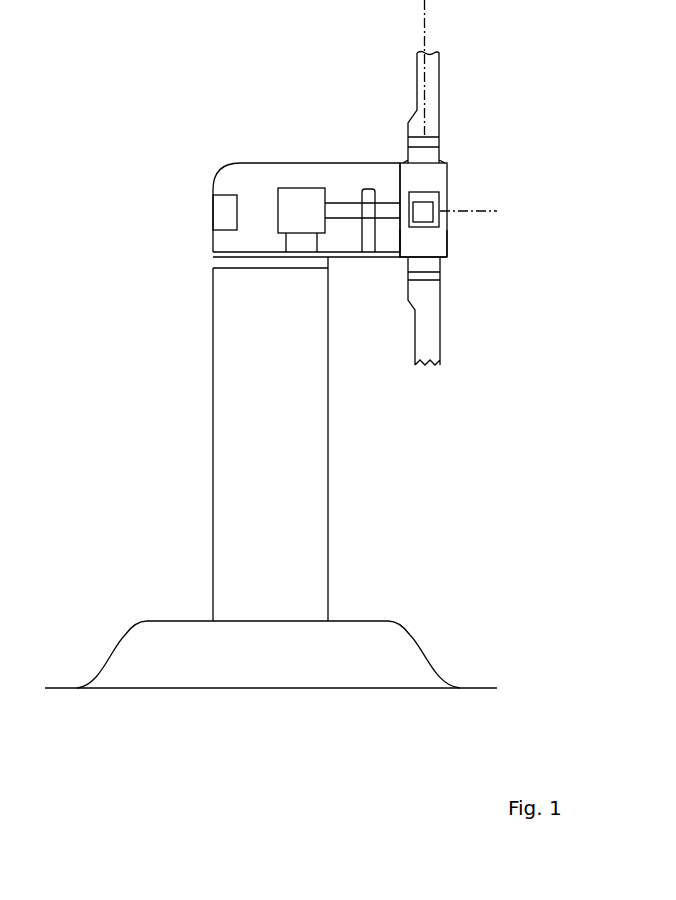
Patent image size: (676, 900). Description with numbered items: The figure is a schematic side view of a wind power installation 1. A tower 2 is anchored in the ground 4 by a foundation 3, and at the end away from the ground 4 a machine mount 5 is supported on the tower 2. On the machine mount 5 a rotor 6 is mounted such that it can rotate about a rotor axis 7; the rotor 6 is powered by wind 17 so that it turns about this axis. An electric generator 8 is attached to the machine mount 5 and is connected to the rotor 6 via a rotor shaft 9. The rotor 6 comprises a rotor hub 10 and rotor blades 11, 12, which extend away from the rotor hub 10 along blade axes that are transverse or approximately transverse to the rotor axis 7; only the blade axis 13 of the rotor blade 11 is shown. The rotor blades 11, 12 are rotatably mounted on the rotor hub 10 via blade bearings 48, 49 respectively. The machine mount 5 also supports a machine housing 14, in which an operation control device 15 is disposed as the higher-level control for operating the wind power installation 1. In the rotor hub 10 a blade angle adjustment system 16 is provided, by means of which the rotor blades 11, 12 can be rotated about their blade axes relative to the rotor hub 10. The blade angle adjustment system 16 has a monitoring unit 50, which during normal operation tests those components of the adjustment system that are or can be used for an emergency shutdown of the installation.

The wind power installation 1 is at (182, 97).
The tower 2 is at (213, 422).
The foundation 3 is at (135, 625).
The ground 4 is at (63, 688).
The machine mount 5 is at (225, 252).
The rotor 6 is at (465, 162).
The rotor axis 7 is at (487, 208).
The electric generator 8 is at (300, 188).
The rotor shaft 9 is at (338, 203).
The rotor hub 10 is at (447, 248).
The rotor blade 11 is at (435, 78).
The rotor blade 12 is at (435, 352).
The blade axis 13 is at (425, 18).
The machine housing 14 is at (266, 162).
The operation control device 15 is at (227, 193).
The blade angle adjustment system 16 is at (430, 193).
The wind 17 is at (532, 163).
The blade bearing 48 is at (408, 143).
The blade bearing 49 is at (410, 277).
The monitoring unit 50 is at (431, 221).